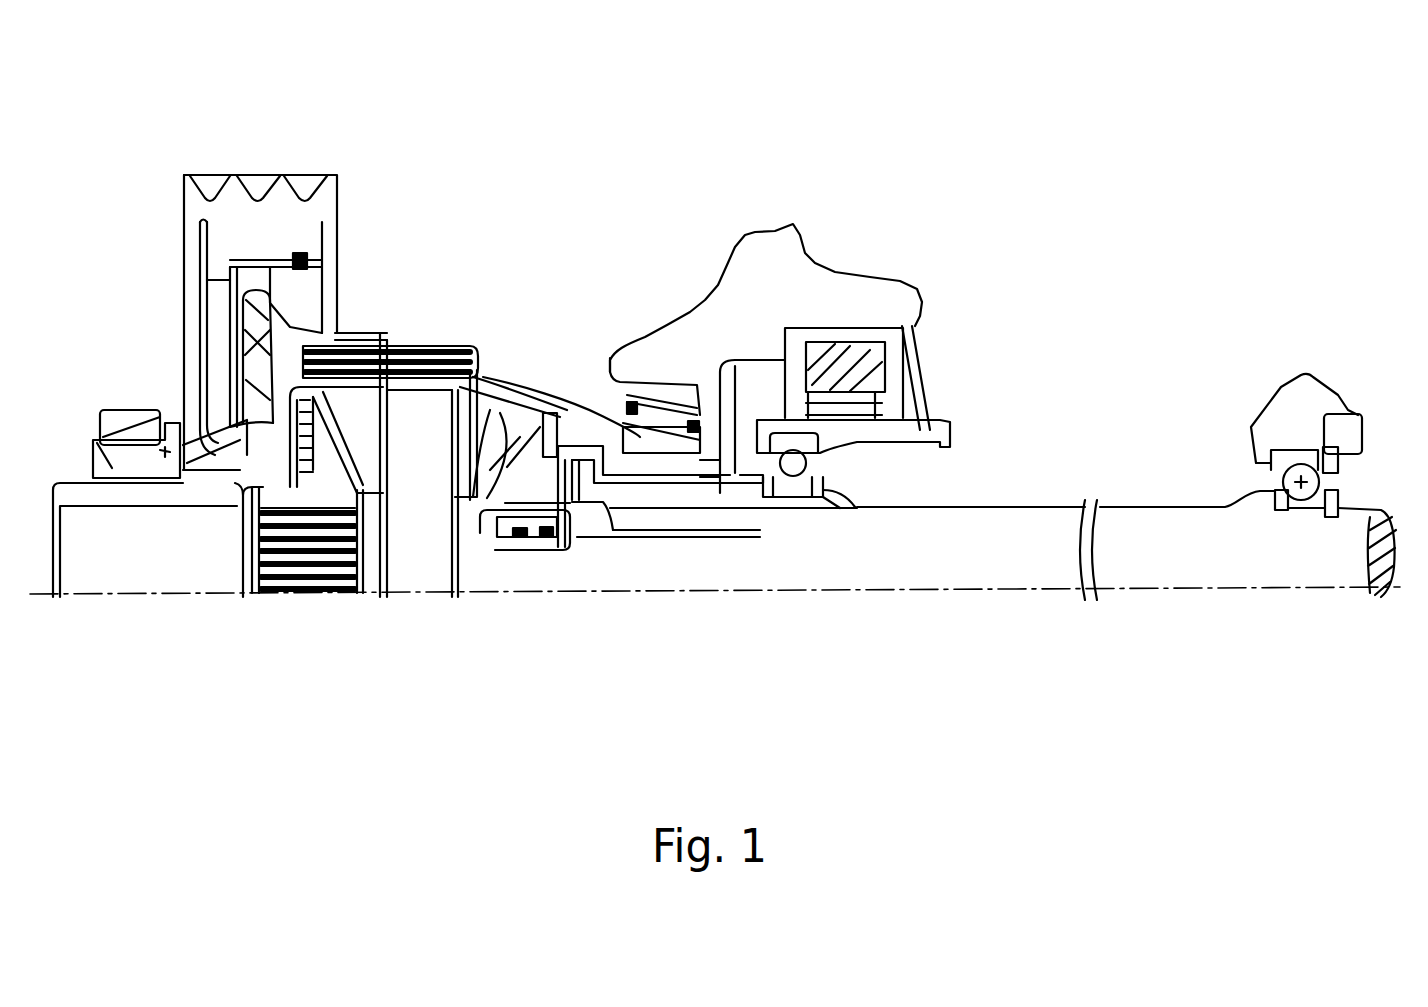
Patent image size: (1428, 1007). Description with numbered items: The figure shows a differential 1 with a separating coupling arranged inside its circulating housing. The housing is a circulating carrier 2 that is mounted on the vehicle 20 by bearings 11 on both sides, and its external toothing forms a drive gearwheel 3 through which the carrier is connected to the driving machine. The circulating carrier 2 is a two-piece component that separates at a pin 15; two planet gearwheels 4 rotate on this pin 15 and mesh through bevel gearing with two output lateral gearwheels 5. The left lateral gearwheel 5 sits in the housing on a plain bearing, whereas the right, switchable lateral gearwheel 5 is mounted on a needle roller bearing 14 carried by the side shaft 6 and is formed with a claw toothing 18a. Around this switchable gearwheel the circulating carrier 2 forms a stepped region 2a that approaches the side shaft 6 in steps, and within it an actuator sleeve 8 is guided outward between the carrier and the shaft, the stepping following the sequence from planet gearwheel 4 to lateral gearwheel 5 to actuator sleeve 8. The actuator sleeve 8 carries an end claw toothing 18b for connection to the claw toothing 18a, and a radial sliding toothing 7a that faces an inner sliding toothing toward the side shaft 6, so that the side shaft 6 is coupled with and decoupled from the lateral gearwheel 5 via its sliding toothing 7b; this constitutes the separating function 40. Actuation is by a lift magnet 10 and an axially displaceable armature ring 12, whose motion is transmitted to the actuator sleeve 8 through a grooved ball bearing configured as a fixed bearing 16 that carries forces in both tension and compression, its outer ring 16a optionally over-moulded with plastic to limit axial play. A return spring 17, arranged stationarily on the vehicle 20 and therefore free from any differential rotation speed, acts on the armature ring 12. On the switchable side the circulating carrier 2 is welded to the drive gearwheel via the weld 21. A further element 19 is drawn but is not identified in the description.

The differential 1 is at (390, 86).
The circulating carrier 2 is at (360, 332).
The stepped region 2a is at (568, 413).
The drive gearwheel 3 is at (205, 198).
The planet gearwheels 4 is at (490, 357).
The lateral gearwheels 5 is at (250, 567).
The side shaft 6 is at (1192, 555).
The radial sliding toothing 7a is at (667, 537).
The sliding toothing 7b is at (760, 537).
The actuator sleeve 8 is at (733, 372).
The lift magnet 10 is at (870, 363).
The bearings 11 is at (667, 415).
The armature ring 12 is at (860, 440).
The needle roller bearing 14 is at (530, 537).
The pin 15 is at (390, 557).
The fixed bearing 16 is at (825, 462).
The outer ring 16a is at (810, 497).
The return spring 17 is at (913, 350).
The claw toothing 18a is at (503, 500).
The claw toothing 18b is at (585, 508).
The support bearing 19 is at (1318, 460).
The vehicle 20 is at (820, 297).
The weld 21 is at (298, 253).
The separating function 40 is at (588, 160).